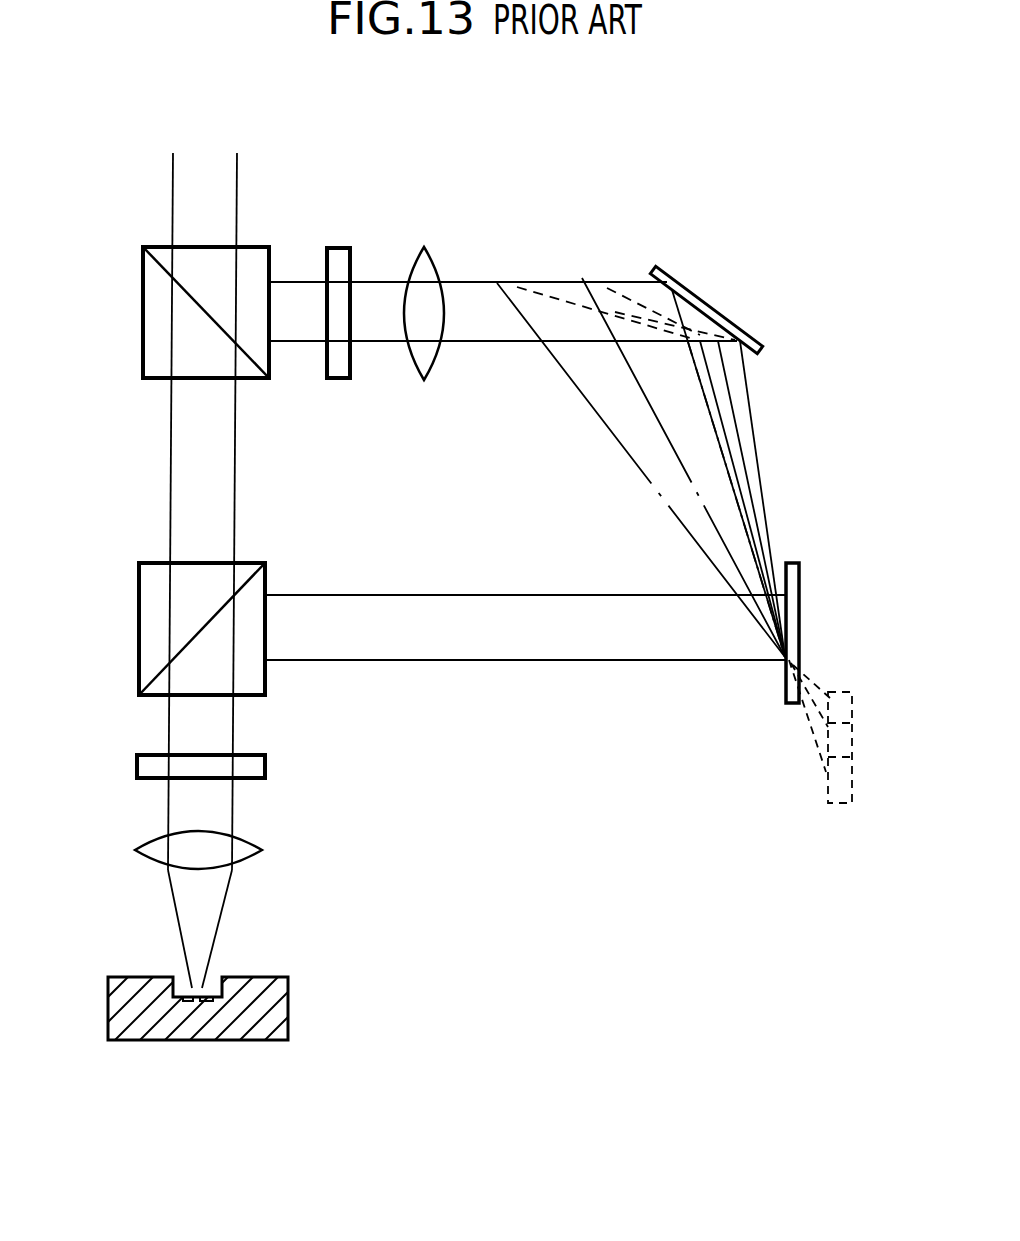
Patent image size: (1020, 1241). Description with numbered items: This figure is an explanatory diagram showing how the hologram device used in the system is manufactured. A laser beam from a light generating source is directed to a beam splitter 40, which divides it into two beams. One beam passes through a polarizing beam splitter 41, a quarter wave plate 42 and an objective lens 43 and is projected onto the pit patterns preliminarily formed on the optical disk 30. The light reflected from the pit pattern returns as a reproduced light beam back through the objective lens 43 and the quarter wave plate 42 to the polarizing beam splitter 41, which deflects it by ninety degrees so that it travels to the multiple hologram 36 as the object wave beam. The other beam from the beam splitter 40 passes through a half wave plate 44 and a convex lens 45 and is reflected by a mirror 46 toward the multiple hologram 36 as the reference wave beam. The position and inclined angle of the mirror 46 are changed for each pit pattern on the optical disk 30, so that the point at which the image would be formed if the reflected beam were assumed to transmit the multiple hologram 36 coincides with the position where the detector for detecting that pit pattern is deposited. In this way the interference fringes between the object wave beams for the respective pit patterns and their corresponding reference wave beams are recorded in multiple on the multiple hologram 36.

The optical disk 30 is at (122, 1022).
The multiple hologram 36 is at (800, 583).
The beam splitter 40 is at (142, 353).
The polarizing beam splitter 41 is at (139, 642).
The quarter wave plate 42 is at (137, 762).
The objective lens 43 is at (150, 840).
The half wave plate 44 is at (337, 247).
The convex lens 45 is at (425, 250).
The mirror 46 is at (710, 300).